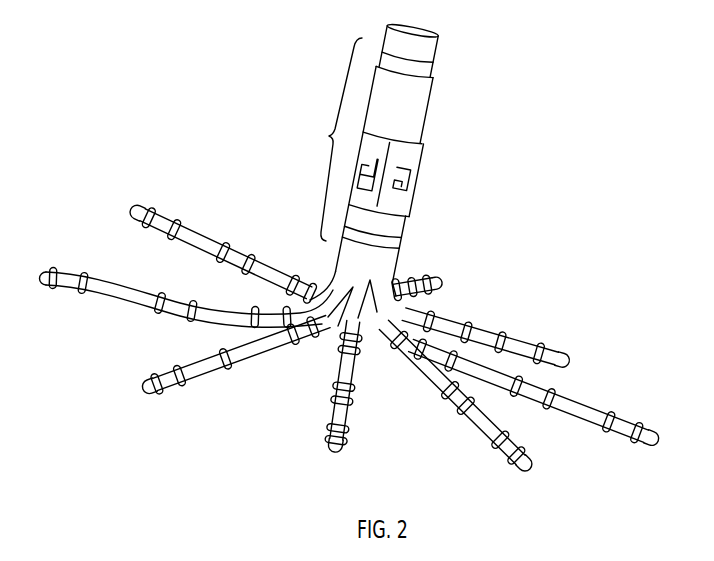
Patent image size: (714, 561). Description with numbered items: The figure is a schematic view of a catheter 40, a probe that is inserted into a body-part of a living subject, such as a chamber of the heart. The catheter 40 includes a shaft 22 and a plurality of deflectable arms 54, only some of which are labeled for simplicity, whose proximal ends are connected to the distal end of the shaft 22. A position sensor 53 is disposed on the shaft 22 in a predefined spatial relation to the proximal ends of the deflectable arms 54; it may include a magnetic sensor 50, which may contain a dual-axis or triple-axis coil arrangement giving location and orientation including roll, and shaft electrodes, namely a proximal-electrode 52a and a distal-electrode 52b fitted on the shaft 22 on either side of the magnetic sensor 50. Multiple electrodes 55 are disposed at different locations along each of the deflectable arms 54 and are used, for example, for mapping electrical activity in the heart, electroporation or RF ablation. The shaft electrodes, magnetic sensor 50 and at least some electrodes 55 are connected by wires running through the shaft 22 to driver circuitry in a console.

The catheter 40 is at (181, 105).
The shaft 22 is at (422, 113).
The proximal-electrode 52a is at (435, 62).
The distal-electrode 52b is at (400, 243).
The magnetic sensor 50 is at (413, 193).
The position sensor 53 is at (323, 139).
The deflectable arms 54 is at (137, 383).
The electrodes 55 is at (642, 424).